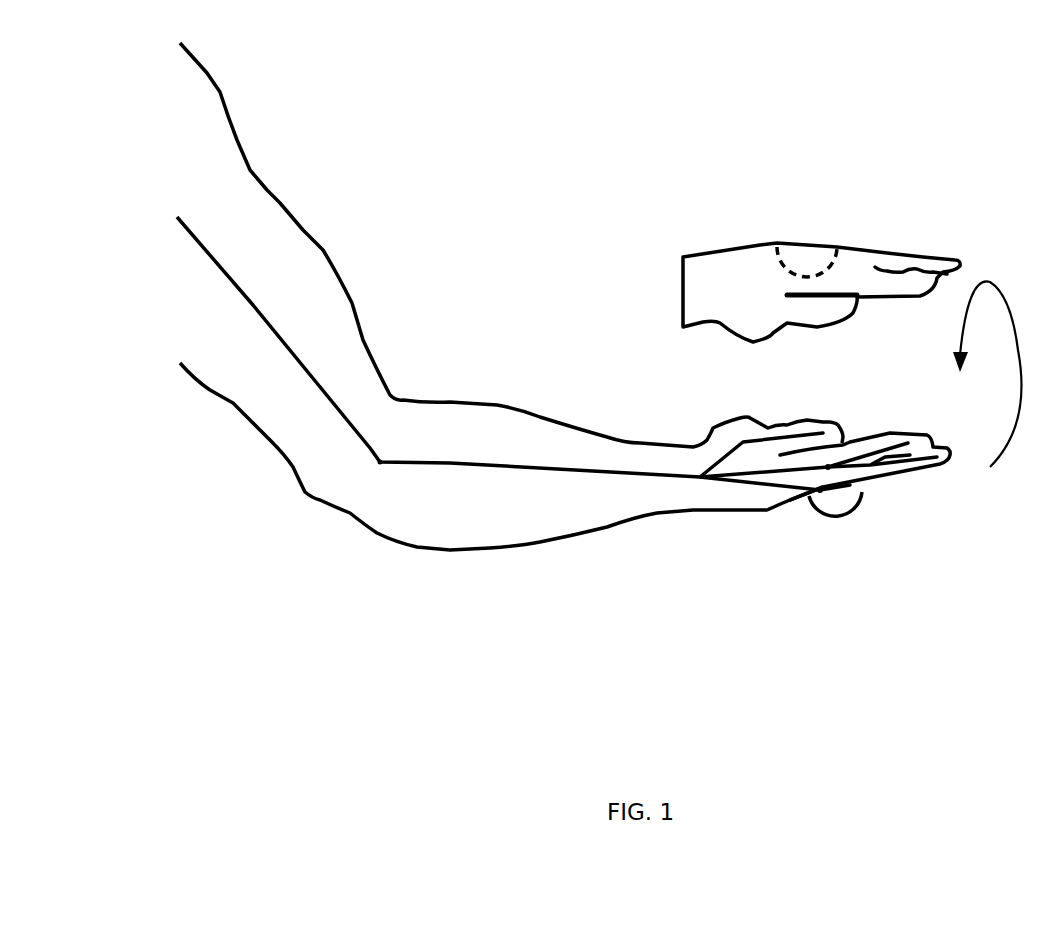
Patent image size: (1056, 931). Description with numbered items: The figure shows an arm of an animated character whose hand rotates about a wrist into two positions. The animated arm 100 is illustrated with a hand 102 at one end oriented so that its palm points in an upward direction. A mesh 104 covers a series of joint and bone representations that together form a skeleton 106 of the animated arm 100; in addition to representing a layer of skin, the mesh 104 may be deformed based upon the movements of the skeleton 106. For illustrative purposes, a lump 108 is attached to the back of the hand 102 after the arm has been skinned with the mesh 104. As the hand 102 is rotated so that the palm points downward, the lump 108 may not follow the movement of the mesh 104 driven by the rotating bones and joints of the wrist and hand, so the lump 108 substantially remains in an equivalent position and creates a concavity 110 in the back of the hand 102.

The animated arm 100 is at (510, 296).
The hand 102 is at (890, 480).
The mesh 104 is at (287, 205).
The skeleton 106 is at (253, 305).
The lump 108 is at (823, 527).
The concavity 110 is at (825, 253).